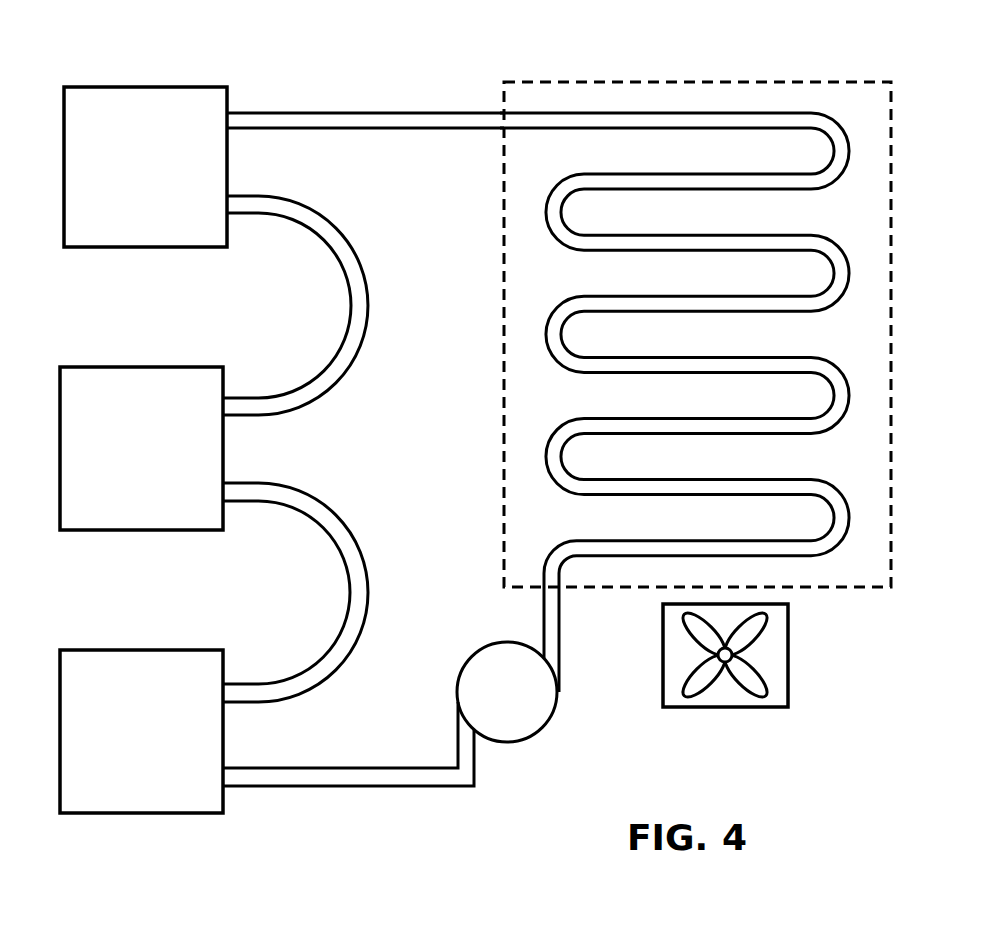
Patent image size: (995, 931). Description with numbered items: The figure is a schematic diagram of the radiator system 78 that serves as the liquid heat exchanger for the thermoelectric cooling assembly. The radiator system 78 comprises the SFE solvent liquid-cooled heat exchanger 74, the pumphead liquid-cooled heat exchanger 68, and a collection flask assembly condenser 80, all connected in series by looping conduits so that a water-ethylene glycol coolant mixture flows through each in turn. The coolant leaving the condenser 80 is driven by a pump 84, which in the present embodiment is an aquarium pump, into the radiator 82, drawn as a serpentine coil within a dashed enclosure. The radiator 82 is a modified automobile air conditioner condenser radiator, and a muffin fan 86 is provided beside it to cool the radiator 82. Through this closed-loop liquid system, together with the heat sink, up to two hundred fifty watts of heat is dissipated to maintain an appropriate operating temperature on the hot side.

The pumphead liquid-cooled heat exchanger 68 is at (123, 464).
The SFE solvent liquid-cooled heat exchanger 74 is at (123, 182).
The radiator system 78 is at (405, 88).
The collection flask assembly condenser 80 is at (121, 749).
The radiator 82 is at (875, 102).
The pump 84 is at (530, 717).
The muffin fan 86 is at (720, 700).